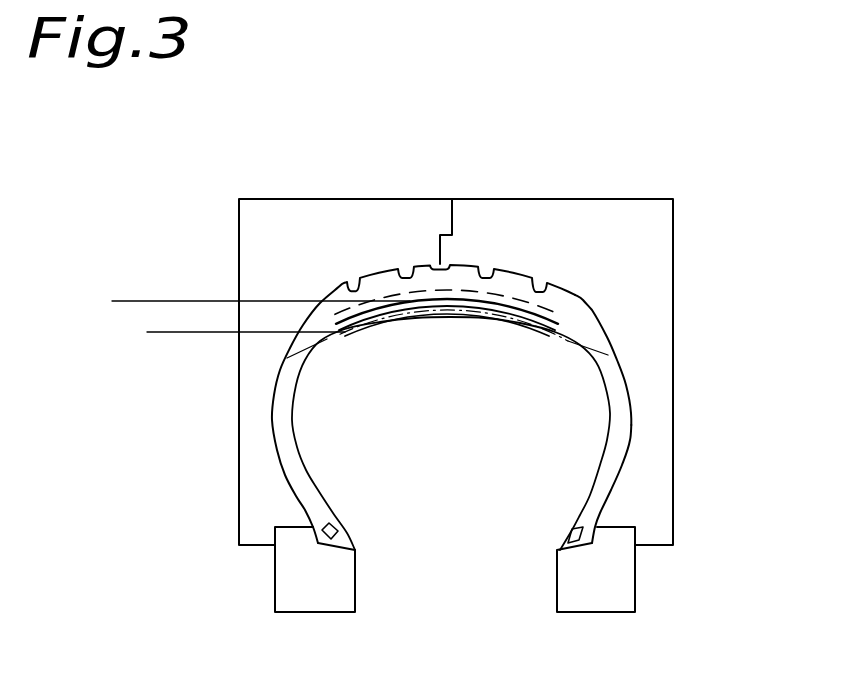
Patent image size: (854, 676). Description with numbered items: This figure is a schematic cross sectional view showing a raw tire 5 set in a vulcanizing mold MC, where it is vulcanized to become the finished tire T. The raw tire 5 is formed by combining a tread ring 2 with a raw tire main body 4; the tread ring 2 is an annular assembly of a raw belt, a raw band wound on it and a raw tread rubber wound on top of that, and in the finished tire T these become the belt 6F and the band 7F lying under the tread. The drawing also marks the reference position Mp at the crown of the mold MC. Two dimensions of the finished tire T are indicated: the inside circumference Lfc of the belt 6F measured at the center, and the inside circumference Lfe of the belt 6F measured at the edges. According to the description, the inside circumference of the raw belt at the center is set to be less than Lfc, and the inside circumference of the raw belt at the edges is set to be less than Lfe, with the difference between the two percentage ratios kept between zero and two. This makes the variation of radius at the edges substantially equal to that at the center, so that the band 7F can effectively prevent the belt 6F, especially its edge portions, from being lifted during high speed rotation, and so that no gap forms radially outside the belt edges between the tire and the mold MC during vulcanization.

The mold parting position / tire equator position of mold Mp is at (453, 264).
The band 7F is at (547, 318).
The finished tire T is at (592, 310).
The belt 6F is at (586, 317).
The vulcanizing mold MC is at (673, 350).
The tread ring 2 is at (607, 337).
The raw tire main body 4 is at (632, 425).
The raw tire 5 is at (755, 397).
The inside circumference of the belt at the center Lfc is at (124, 315).
The inside circumference of the belt at the edges Lfe is at (167, 346).